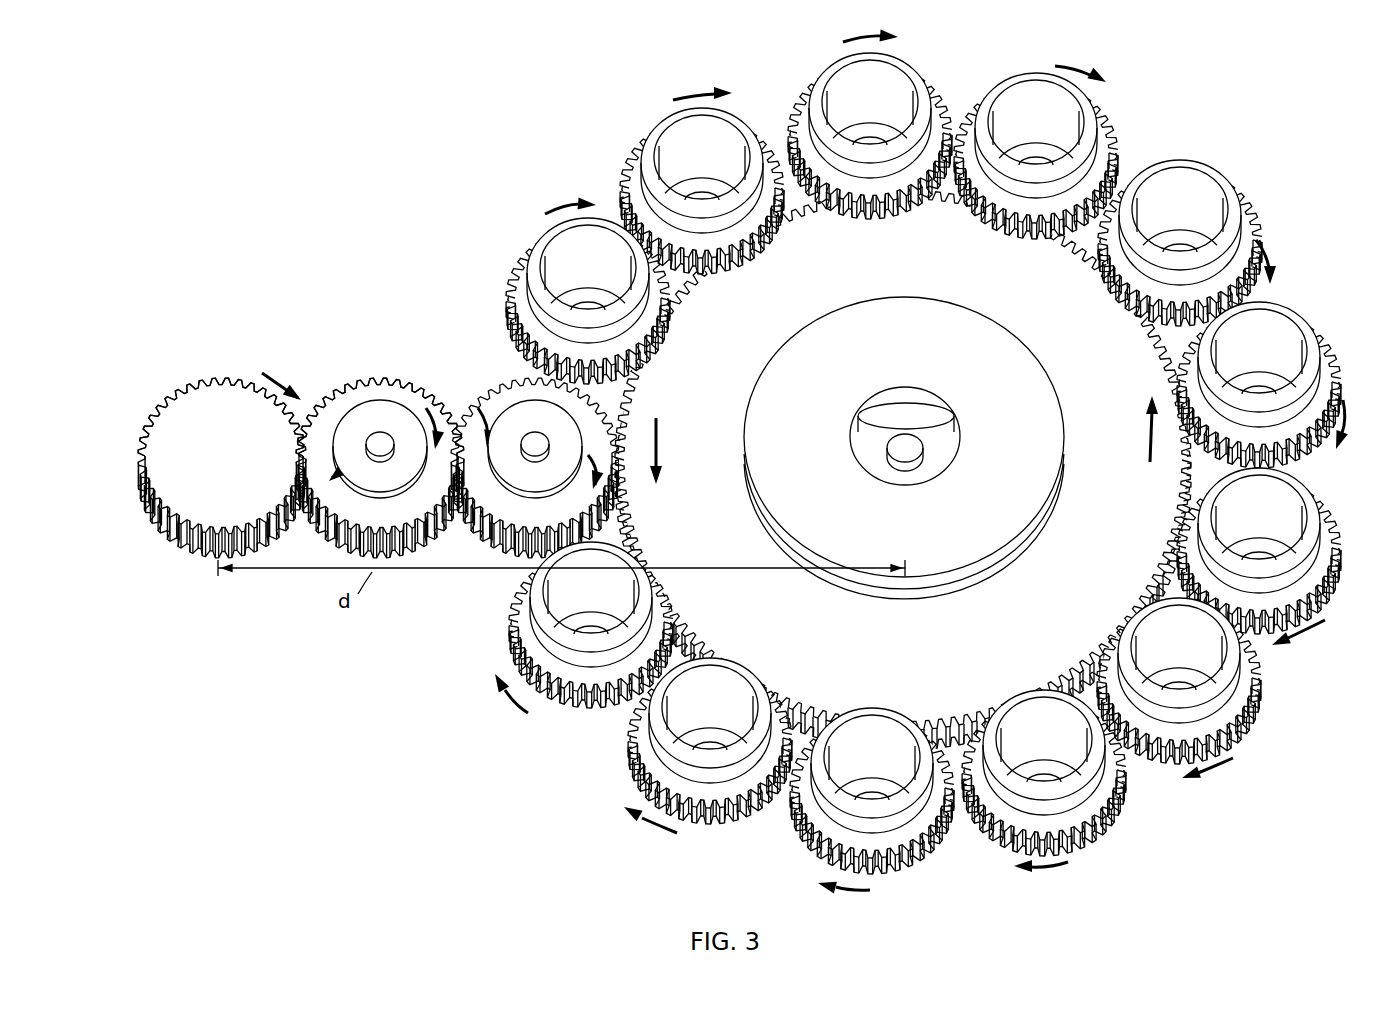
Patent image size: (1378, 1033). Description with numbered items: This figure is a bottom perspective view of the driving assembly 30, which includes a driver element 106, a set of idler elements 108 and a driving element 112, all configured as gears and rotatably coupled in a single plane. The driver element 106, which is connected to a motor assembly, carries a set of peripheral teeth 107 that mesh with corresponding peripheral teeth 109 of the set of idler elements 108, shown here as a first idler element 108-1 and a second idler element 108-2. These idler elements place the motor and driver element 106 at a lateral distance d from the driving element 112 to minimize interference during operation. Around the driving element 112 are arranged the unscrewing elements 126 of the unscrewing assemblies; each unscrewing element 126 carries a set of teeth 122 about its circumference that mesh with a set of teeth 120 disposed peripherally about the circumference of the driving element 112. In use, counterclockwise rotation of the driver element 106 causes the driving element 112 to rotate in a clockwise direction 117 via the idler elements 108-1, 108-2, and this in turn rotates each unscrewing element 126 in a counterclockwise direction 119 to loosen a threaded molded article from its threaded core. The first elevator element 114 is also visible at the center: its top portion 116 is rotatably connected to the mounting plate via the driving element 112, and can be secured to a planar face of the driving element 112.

The driving assembly 30 is at (892, 461).
The driver element 106 is at (176, 425).
The set of peripheral teeth 107 is at (185, 372).
The set of idler elements 108 is at (528, 428).
The first idler element 108-1 is at (337, 525).
The second idler element 108-2 is at (490, 520).
The peripheral teeth 109 is at (318, 388).
The driving element 112 is at (703, 325).
The first elevator element 114 is at (916, 326).
The top portion 116 is at (985, 580).
The clockwise direction 117 is at (1150, 450).
The counterclockwise direction 119 is at (660, 840).
The set of teeth 120 is at (728, 285).
The set of teeth 122 is at (522, 238).
The unscrewing element 126 is at (535, 275).